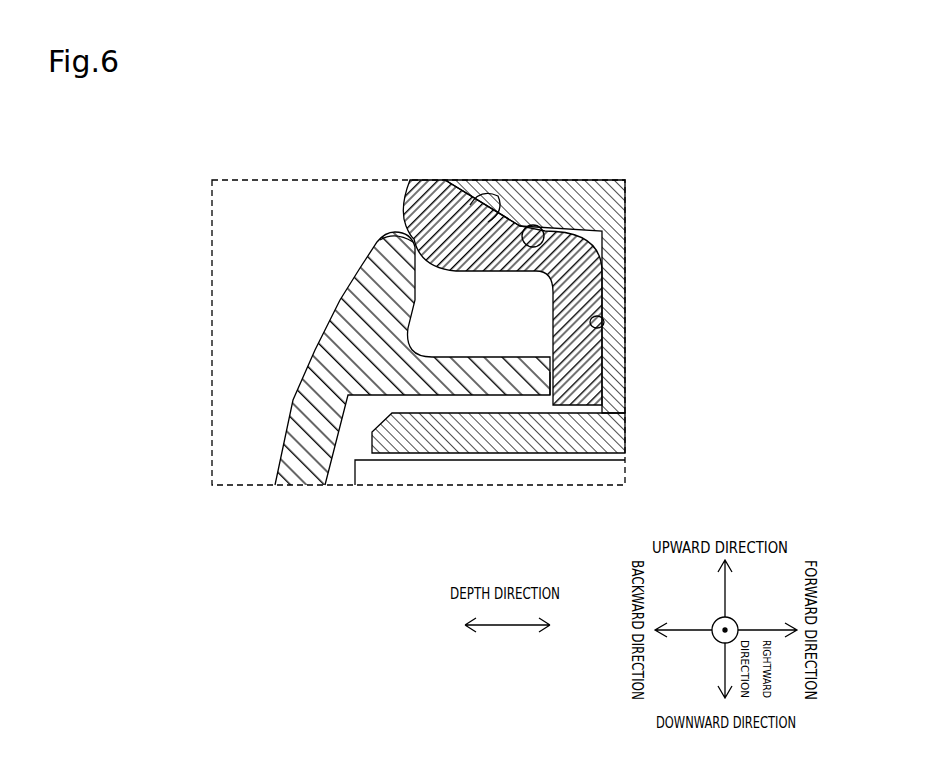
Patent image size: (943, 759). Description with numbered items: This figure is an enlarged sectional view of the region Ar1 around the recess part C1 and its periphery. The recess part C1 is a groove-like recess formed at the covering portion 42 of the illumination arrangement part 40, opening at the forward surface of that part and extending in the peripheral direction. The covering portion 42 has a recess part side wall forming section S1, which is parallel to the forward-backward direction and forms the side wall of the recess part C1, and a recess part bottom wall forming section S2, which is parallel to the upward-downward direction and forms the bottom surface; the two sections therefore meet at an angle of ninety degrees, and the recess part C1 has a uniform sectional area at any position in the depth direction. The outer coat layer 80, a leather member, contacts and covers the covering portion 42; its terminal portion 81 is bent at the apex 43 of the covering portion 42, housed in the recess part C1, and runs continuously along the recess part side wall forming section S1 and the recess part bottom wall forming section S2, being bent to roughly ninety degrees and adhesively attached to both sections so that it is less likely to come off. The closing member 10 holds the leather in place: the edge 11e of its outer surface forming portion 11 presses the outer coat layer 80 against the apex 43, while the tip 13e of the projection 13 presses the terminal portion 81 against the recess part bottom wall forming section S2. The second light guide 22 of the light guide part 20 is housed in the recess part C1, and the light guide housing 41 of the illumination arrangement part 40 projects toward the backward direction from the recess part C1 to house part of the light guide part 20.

The closing member 10 is at (395, 373).
The outer surface forming portion 11 is at (292, 440).
The edge 11e is at (404, 236).
The projection 13 is at (405, 337).
The tip 13e is at (550, 388).
The light guide part 20 is at (539, 477).
The second light guide 22 is at (605, 469).
The illumination arrangement part 40 is at (585, 260).
The light guide housing 41 is at (462, 440).
The covering portion 42 is at (585, 260).
The apex 43 is at (488, 194).
The outer coat layer 80 is at (492, 263).
The terminal portion 81 is at (529, 295).
The region Ar1 is at (272, 178).
The recess part C1 is at (503, 351).
The recess part side wall forming section S1 is at (545, 232).
The recess part bottom wall forming section S2 is at (603, 322).